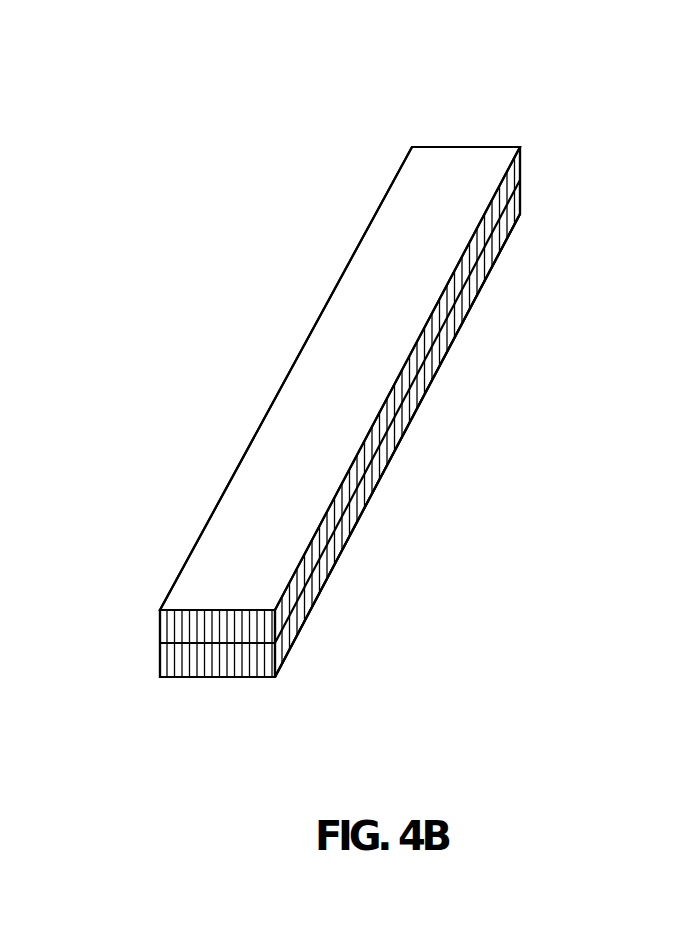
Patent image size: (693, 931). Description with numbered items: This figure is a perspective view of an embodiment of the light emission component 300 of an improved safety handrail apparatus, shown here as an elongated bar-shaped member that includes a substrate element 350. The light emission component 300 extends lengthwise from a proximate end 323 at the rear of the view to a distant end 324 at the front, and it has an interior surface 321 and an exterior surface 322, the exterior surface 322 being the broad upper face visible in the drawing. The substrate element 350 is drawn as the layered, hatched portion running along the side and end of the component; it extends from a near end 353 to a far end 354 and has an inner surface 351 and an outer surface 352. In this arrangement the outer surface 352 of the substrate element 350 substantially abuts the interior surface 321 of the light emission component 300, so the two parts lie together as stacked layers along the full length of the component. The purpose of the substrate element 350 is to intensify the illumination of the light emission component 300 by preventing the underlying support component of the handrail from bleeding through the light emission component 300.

The light emission component 300 is at (537, 108).
The interior surface 321 is at (160, 642).
The exterior surface 322 is at (243, 493).
The proximate end 323 is at (445, 147).
The distant end 324 is at (193, 627).
The substrate element 350 is at (508, 279).
The inner surface 351 is at (325, 582).
The outer surface 352 is at (368, 472).
The near end 353 is at (522, 193).
The far end 354 is at (223, 680).